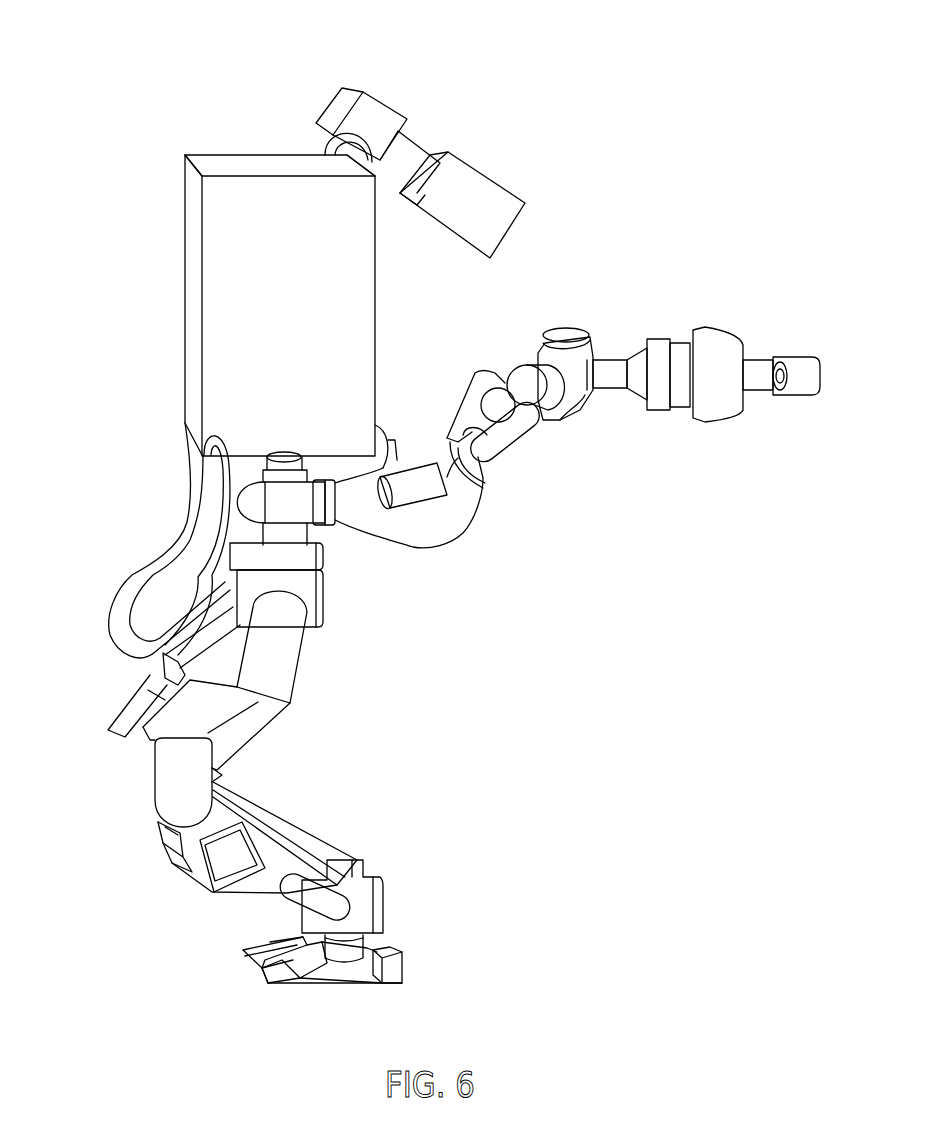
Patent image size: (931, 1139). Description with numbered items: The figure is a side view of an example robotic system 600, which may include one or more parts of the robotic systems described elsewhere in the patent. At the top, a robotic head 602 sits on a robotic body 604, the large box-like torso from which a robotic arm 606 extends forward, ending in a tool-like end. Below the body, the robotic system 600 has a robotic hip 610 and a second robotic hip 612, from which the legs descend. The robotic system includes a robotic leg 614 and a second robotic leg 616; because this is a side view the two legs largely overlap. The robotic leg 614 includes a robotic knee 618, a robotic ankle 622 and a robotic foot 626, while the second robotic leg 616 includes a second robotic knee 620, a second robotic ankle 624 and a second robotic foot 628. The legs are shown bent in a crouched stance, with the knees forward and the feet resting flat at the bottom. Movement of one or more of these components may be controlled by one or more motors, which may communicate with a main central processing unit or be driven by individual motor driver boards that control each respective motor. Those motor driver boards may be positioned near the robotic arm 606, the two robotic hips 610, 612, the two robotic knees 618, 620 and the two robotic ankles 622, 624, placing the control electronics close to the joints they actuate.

The robotic system 600 is at (97, 29).
The robotic head 602 is at (290, 82).
The robotic body 604 is at (138, 293).
The robotic arm 606 is at (642, 287).
The robotic hip 610 is at (360, 635).
The second robotic hip 612 is at (360, 582).
The robotic leg 614 is at (340, 755).
The second robotic leg 616 is at (323, 717).
The robotic knee 618 is at (118, 833).
The second robotic knee 620 is at (117, 783).
The robotic ankle 622 is at (418, 967).
The second robotic ankle 624 is at (402, 920).
The robotic foot 626 is at (308, 993).
The second robotic foot 628 is at (238, 957).